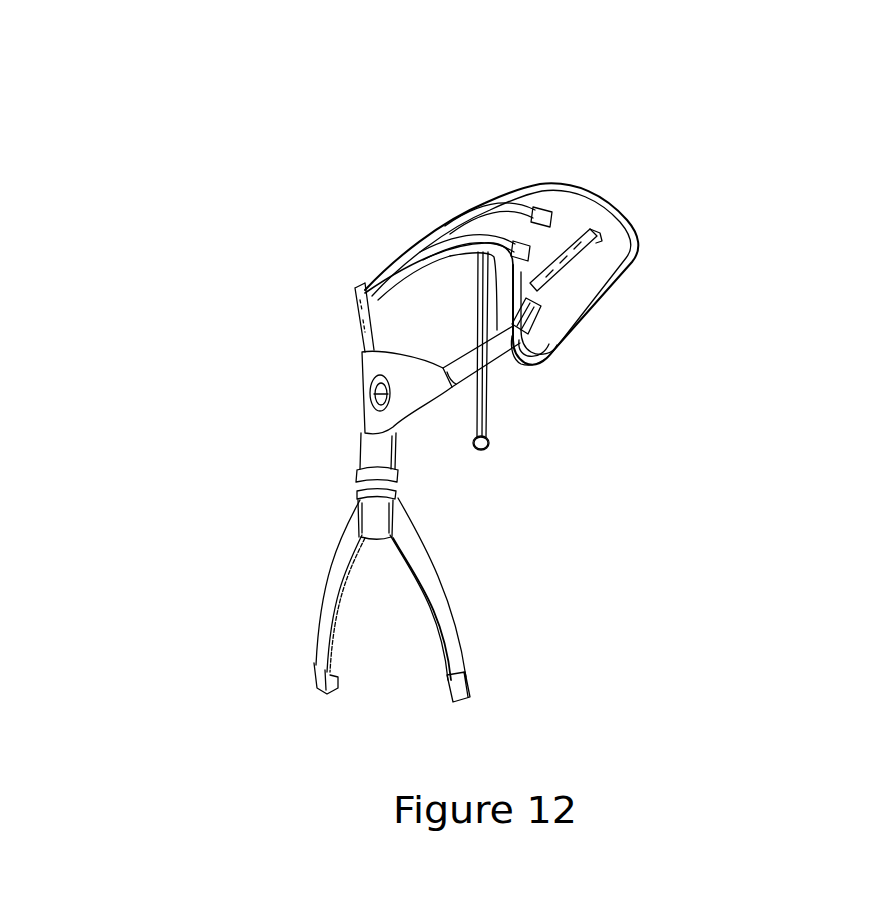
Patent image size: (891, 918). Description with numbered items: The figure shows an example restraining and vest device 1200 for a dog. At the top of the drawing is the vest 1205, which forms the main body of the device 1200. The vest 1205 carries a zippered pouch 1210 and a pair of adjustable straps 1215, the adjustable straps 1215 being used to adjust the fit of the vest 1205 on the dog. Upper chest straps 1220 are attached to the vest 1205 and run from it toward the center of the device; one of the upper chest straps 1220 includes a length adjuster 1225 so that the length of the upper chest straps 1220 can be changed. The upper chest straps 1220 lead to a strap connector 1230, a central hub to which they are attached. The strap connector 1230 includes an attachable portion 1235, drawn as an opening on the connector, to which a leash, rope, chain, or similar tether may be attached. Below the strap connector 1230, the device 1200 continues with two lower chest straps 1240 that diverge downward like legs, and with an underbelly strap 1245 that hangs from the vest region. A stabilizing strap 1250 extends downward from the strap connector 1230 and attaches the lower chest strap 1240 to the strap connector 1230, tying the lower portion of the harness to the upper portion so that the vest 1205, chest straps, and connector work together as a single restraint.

The restraining and vest device 1200 is at (640, 114).
The vest 1205 is at (577, 212).
The zippered pouch 1210 is at (575, 238).
The adjustable straps 1215 is at (503, 200).
The upper chest straps 1220 is at (355, 310).
The length adjuster 1225 is at (525, 322).
The strap connector 1230 is at (367, 412).
The attachable portion 1235 is at (360, 363).
The lower chest straps 1240 is at (317, 610).
The underbelly strap 1245 is at (490, 446).
The stabilizing strap 1250 is at (367, 447).